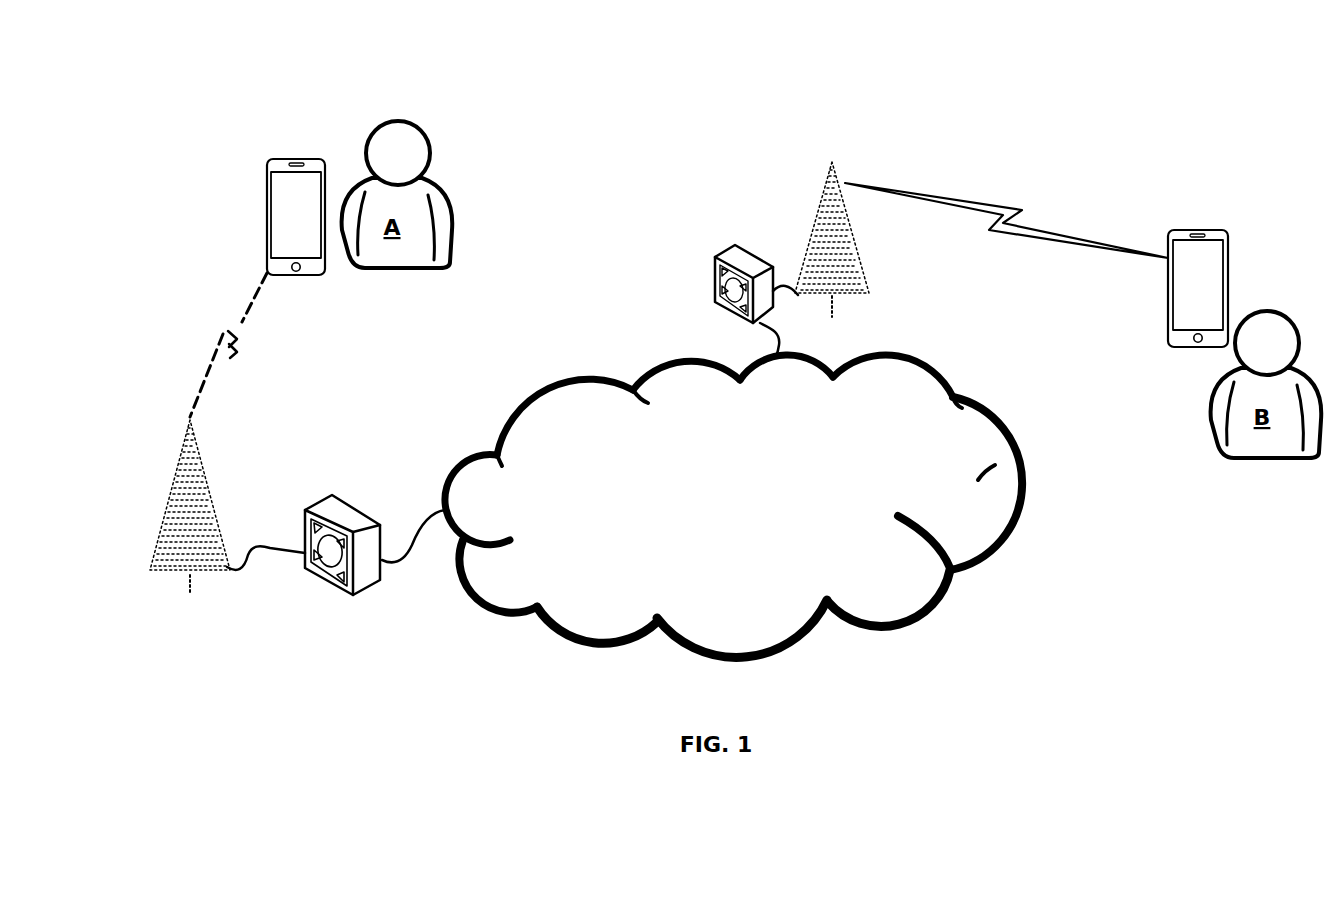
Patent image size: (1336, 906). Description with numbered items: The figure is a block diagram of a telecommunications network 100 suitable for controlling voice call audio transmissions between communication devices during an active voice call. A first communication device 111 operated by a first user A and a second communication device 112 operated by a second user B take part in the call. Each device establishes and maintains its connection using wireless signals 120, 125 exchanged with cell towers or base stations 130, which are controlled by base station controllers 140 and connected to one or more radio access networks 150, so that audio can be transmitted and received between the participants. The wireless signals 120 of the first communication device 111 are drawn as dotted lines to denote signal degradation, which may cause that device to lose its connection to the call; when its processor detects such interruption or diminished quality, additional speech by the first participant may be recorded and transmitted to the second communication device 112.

The telecommunications network 100 is at (522, 142).
The first communication device 111 is at (297, 158).
The second communication device 112 is at (1207, 228).
The wireless signals 120 is at (242, 339).
The wireless signals 125 is at (1003, 232).
The base stations 130 is at (188, 577).
The base station controllers 140 is at (355, 508).
The radio access networks 150 is at (733, 506).